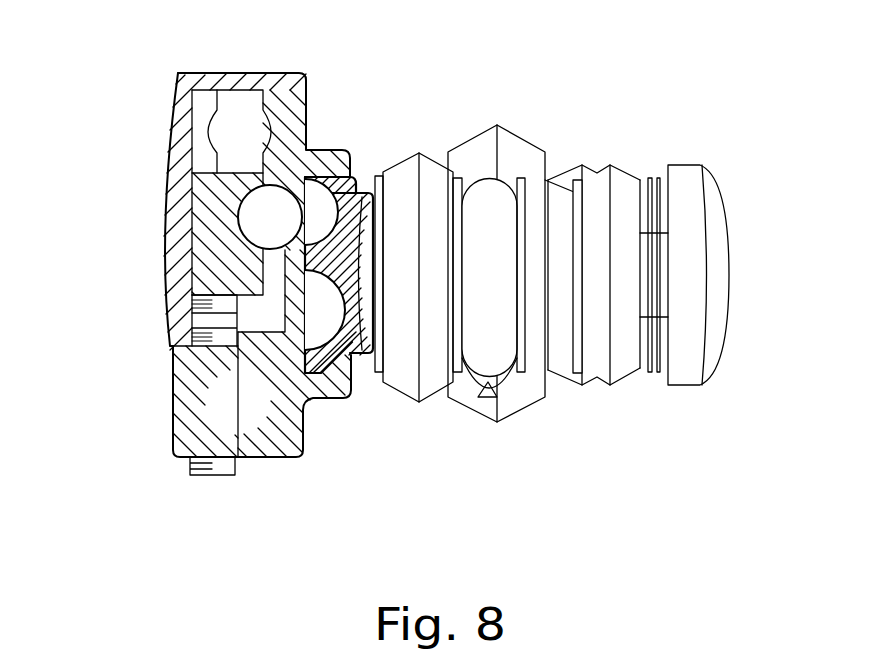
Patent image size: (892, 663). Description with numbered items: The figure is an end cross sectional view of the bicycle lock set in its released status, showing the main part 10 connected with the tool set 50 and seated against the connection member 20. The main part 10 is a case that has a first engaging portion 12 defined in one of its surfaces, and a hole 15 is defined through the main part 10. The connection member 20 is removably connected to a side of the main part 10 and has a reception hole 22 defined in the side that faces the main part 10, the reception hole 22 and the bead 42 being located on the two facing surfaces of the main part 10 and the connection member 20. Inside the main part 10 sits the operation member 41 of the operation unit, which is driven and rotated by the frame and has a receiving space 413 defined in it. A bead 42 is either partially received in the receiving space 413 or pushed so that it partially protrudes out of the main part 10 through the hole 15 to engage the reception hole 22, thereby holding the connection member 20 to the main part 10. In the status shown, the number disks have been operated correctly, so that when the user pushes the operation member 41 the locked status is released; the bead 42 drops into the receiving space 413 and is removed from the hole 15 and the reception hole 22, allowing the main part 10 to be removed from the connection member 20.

The main part 10 is at (293, 463).
The first engaging portion 12 is at (328, 360).
The hole 15 is at (297, 183).
The connection member 20 is at (358, 185).
The reception hole 22 is at (332, 178).
The operation member 41 is at (198, 193).
The receiving space 413 is at (233, 240).
The bead 42 is at (279, 214).
The tool set 50 is at (707, 150).